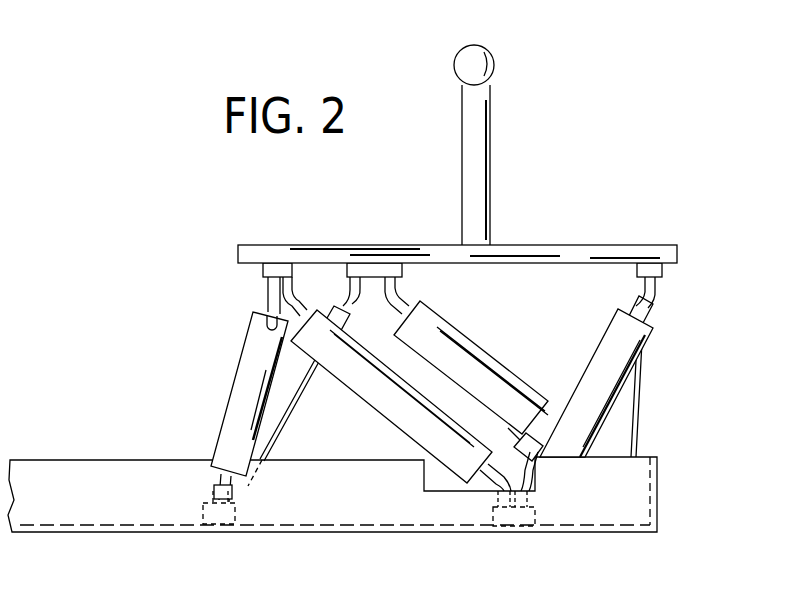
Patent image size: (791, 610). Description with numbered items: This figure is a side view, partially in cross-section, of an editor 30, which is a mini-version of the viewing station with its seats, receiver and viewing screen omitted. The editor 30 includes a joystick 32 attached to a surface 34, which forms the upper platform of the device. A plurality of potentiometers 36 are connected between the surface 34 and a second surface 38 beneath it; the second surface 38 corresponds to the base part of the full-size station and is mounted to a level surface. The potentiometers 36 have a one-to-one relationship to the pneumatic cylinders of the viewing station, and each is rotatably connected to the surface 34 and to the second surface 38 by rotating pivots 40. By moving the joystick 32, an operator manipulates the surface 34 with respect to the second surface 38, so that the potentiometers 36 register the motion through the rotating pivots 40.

The editor 30 is at (226, 226).
The joystick 32 is at (470, 140).
The surface 34 is at (320, 250).
The potentiometers 36 is at (230, 385).
The second surface 38 is at (57, 480).
The rotating pivots 40 is at (265, 268).